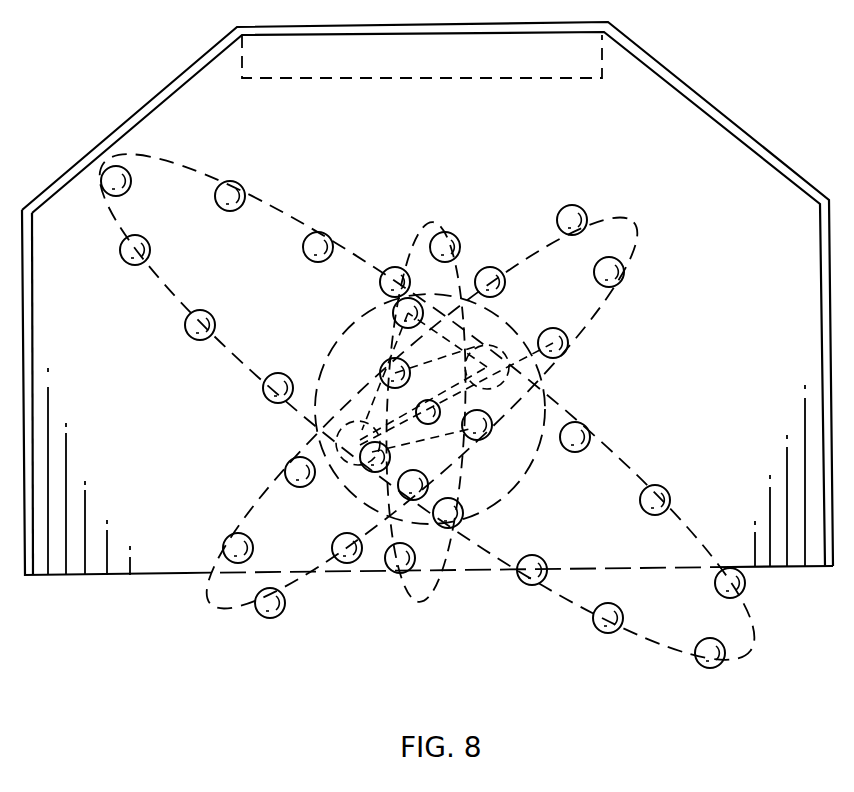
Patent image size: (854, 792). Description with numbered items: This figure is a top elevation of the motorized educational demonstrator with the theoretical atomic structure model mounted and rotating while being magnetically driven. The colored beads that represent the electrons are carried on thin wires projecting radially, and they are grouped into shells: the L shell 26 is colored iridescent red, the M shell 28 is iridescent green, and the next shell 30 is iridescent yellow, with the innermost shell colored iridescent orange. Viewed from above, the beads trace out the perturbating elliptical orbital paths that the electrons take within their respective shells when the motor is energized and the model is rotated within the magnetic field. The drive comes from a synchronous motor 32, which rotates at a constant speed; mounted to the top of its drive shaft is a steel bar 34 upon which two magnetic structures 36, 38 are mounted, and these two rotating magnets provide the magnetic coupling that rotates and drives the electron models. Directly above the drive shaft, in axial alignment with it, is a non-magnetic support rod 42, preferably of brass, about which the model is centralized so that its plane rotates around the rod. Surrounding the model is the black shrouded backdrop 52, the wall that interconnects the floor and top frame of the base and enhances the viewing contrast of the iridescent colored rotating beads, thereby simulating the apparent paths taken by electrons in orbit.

The L shell 26 is at (455, 238).
The M shell 28 is at (282, 612).
The iridescent yellow shell 30 is at (660, 487).
The synchronous motor 32 is at (355, 322).
The steel bar 34 is at (423, 438).
The magnetic structure 36 is at (358, 442).
The magnetic structure 38 is at (512, 378).
The non-magnetic support rod 42 is at (416, 408).
The backdrop 52 is at (700, 93).